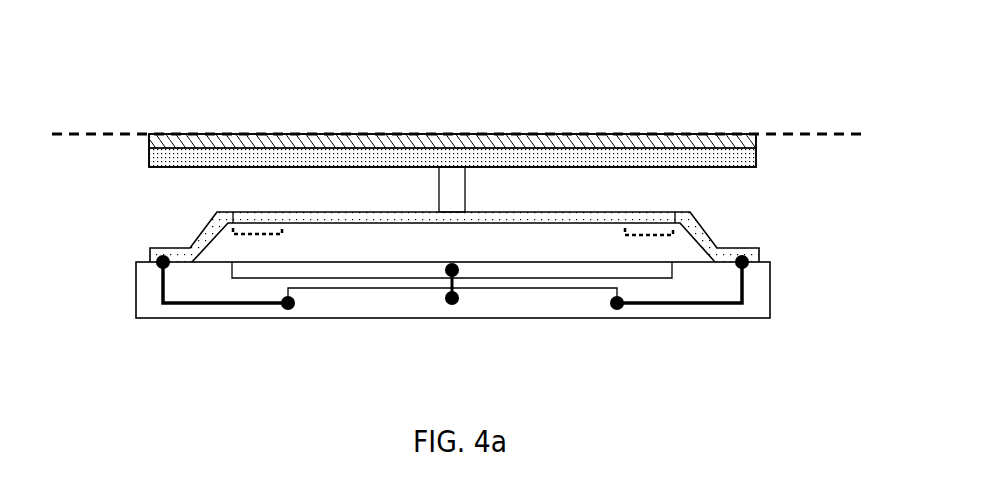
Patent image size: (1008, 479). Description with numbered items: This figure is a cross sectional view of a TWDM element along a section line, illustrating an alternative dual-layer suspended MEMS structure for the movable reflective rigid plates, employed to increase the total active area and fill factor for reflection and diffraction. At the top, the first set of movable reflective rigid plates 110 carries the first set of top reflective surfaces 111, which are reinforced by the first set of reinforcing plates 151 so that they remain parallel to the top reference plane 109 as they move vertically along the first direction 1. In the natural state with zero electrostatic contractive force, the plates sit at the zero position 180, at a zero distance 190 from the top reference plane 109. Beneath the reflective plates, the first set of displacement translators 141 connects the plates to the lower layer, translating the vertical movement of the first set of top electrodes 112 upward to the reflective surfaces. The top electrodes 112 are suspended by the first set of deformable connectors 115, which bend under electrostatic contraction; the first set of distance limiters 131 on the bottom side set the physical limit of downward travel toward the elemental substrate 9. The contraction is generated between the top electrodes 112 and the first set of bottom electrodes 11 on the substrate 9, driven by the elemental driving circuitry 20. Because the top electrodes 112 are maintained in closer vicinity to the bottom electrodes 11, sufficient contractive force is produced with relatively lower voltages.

The first direction 1 is at (673, 92).
The elemental substrate 9 is at (137, 318).
The first set of bottom electrodes 11 is at (245, 267).
The elemental driving circuitry 20 is at (594, 303).
The top reference plane 109 is at (840, 135).
The first set of movable reflective rigid plates 110 is at (292, 97).
The first set of top reflective surfaces 111 is at (602, 135).
The first set of top electrodes 112 is at (486, 223).
The first set of deformable connectors 115 is at (196, 213).
The first set of distance limiters 131 is at (283, 228).
The first set of displacement translators 141 is at (430, 183).
The first set of reinforcing plates 151 is at (521, 160).
The zero position 180 is at (459, 123).
The zero distance 190 is at (80, 130).